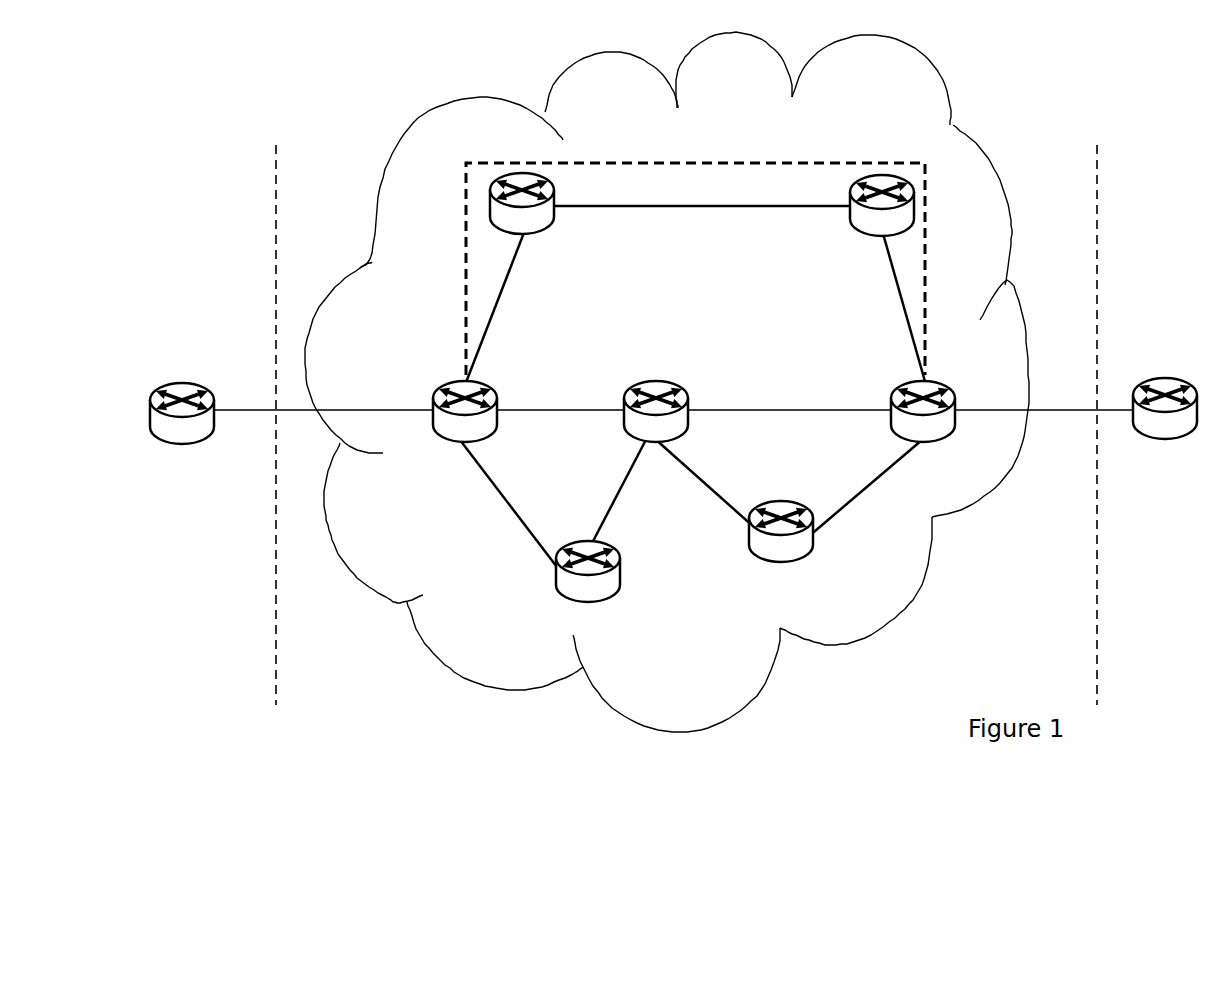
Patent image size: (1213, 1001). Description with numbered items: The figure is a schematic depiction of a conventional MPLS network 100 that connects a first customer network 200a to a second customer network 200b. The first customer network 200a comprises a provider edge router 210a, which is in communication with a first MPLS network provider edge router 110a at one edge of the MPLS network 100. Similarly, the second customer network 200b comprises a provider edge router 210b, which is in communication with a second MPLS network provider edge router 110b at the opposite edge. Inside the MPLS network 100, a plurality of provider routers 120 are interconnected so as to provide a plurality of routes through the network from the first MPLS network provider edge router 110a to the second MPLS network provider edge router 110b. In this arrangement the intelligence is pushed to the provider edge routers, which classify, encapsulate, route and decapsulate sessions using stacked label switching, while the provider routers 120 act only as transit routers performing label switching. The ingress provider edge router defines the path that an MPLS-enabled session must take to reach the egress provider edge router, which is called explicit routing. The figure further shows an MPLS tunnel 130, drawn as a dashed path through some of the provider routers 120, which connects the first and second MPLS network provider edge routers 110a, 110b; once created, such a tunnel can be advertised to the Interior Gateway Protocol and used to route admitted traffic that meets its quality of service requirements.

The MPLS network 100 is at (380, 160).
The first MPLS network provider edge router 110a is at (450, 432).
The second MPLS network provider edge router 110b is at (955, 445).
The provider routers 120 is at (556, 192).
The label switched path 130 is at (622, 165).
The first customer network 200a is at (158, 570).
The second customer network 200b is at (1195, 508).
The provider edge router 210a is at (182, 378).
The provider edge router 210b is at (1165, 372).